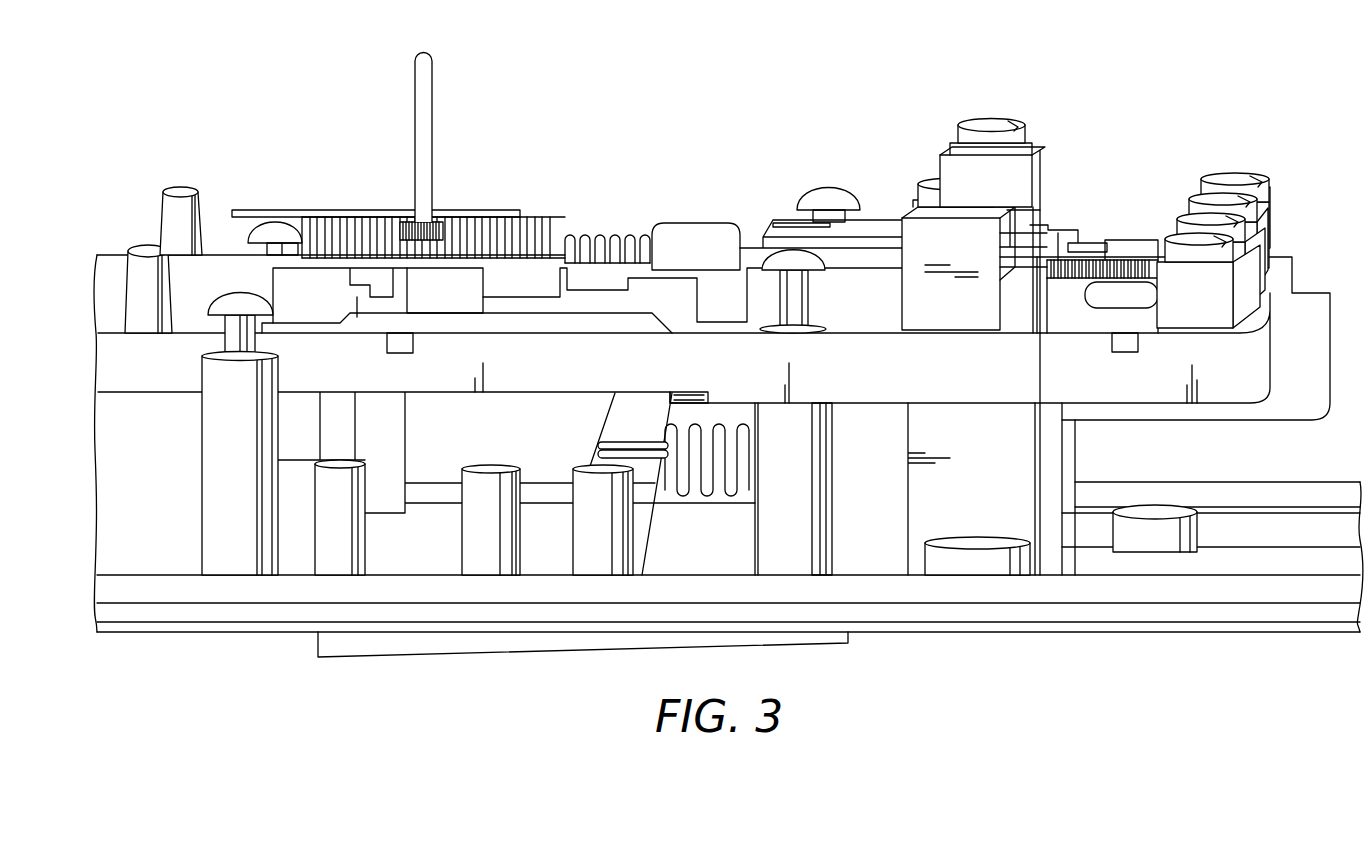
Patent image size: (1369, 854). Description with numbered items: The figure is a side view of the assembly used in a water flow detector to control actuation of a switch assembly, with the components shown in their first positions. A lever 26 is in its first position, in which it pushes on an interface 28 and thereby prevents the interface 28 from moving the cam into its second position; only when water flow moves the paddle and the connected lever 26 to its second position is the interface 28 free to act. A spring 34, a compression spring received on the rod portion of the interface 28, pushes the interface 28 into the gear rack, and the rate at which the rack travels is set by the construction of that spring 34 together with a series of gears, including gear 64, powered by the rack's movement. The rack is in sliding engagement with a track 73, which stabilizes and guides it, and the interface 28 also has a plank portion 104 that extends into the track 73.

The lever 26 is at (620, 417).
The interface 28 is at (681, 392).
The spring 34 is at (1127, 257).
The gear 64 is at (440, 233).
The track 73 is at (460, 285).
The plank portion 104 is at (587, 303).